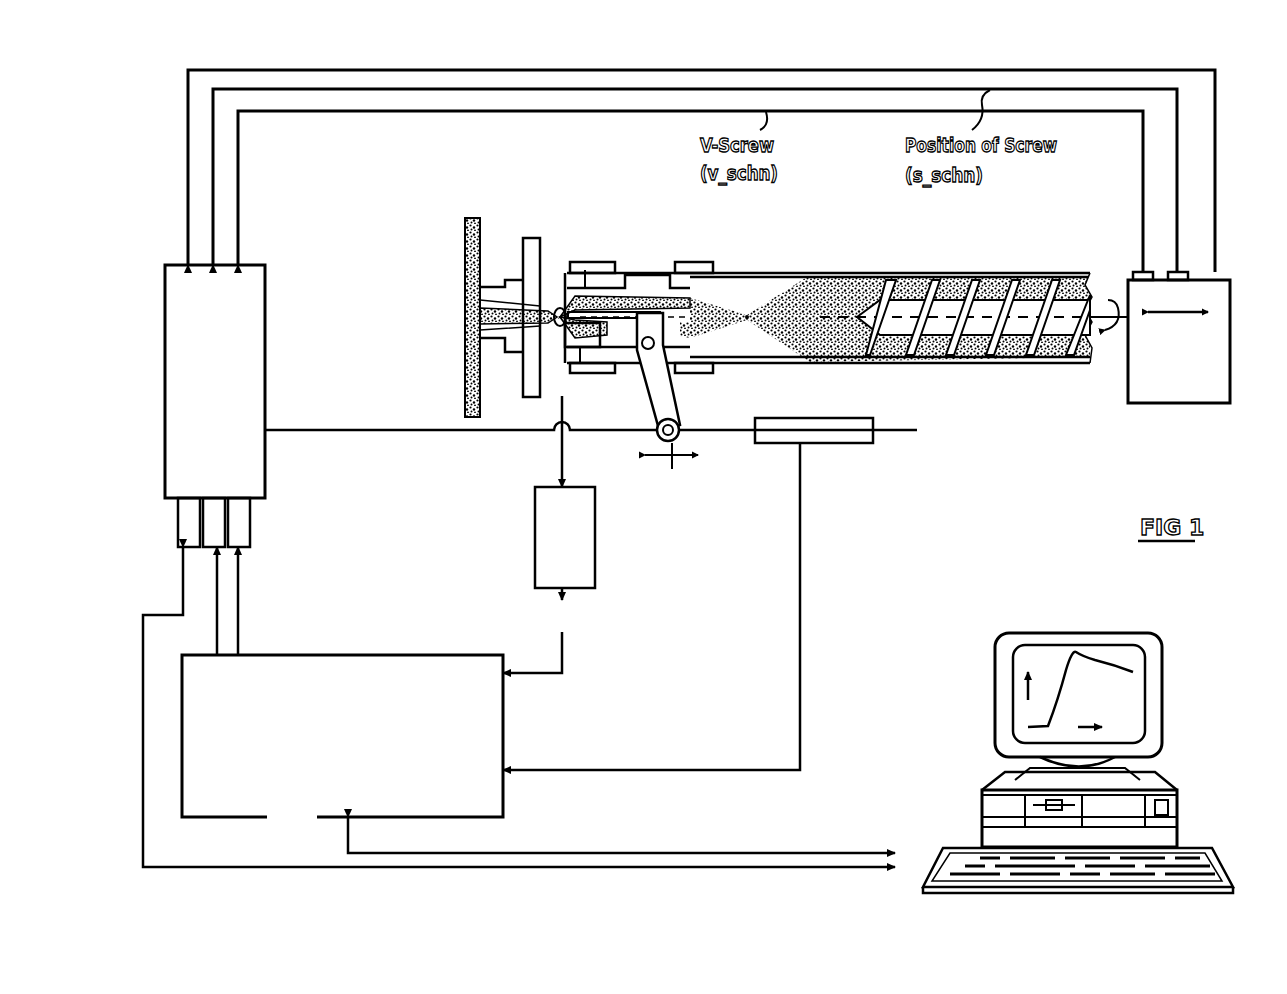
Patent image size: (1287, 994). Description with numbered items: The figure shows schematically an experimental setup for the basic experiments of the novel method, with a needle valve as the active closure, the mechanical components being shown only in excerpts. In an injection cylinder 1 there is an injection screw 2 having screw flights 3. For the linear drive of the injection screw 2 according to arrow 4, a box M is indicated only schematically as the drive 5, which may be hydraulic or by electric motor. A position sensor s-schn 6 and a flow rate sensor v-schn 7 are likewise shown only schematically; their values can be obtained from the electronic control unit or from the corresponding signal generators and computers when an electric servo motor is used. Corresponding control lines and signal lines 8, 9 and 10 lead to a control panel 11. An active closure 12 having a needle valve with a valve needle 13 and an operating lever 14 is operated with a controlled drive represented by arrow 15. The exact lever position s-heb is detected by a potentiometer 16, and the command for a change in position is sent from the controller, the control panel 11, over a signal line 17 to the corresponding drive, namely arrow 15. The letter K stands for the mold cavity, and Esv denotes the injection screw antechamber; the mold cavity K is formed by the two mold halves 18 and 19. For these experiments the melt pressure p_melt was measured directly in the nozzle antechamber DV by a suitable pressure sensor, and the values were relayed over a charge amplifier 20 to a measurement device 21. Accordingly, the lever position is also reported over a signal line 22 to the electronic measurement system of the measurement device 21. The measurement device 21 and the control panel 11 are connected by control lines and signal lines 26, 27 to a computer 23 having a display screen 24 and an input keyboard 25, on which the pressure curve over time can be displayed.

The injection cylinder 1 is at (938, 273).
The injection screw 2 is at (986, 345).
The screw flights 3 is at (1004, 283).
The arrow (linear drive direction) 4 is at (1172, 314).
The box M (linear drive) 5 is at (1230, 365).
The position sensor s-schn 6 is at (1182, 271).
The flow rate sensor v-schn 7 is at (1148, 271).
The control and signal line 8 is at (580, 112).
The control and signal line 9 is at (645, 89).
The control and signal line 10 is at (604, 60).
The control panel 11 is at (265, 303).
The active closure 12 is at (695, 250).
The valve needle 13 is at (583, 362).
The operating lever 14 is at (675, 392).
The arrow (controlled drive) 15 is at (679, 467).
The potentiometer 16 is at (851, 418).
The signal line 17 is at (380, 428).
The mold half 18 is at (445, 253).
The mold half 19 is at (492, 226).
The charge amplifier 20 is at (597, 532).
The measurement device 21 is at (503, 737).
The signal line 22 is at (800, 576).
The computer 23 is at (972, 805).
The display screen 24 is at (988, 688).
The input keyboard 25 is at (1200, 850).
The control and signal line 26 is at (735, 869).
The control and signal line 27 is at (606, 852).
The mold cavity K is at (464, 222).
The nozzle antechamber DV is at (565, 300).
The injection screw antechamber Esv is at (780, 288).